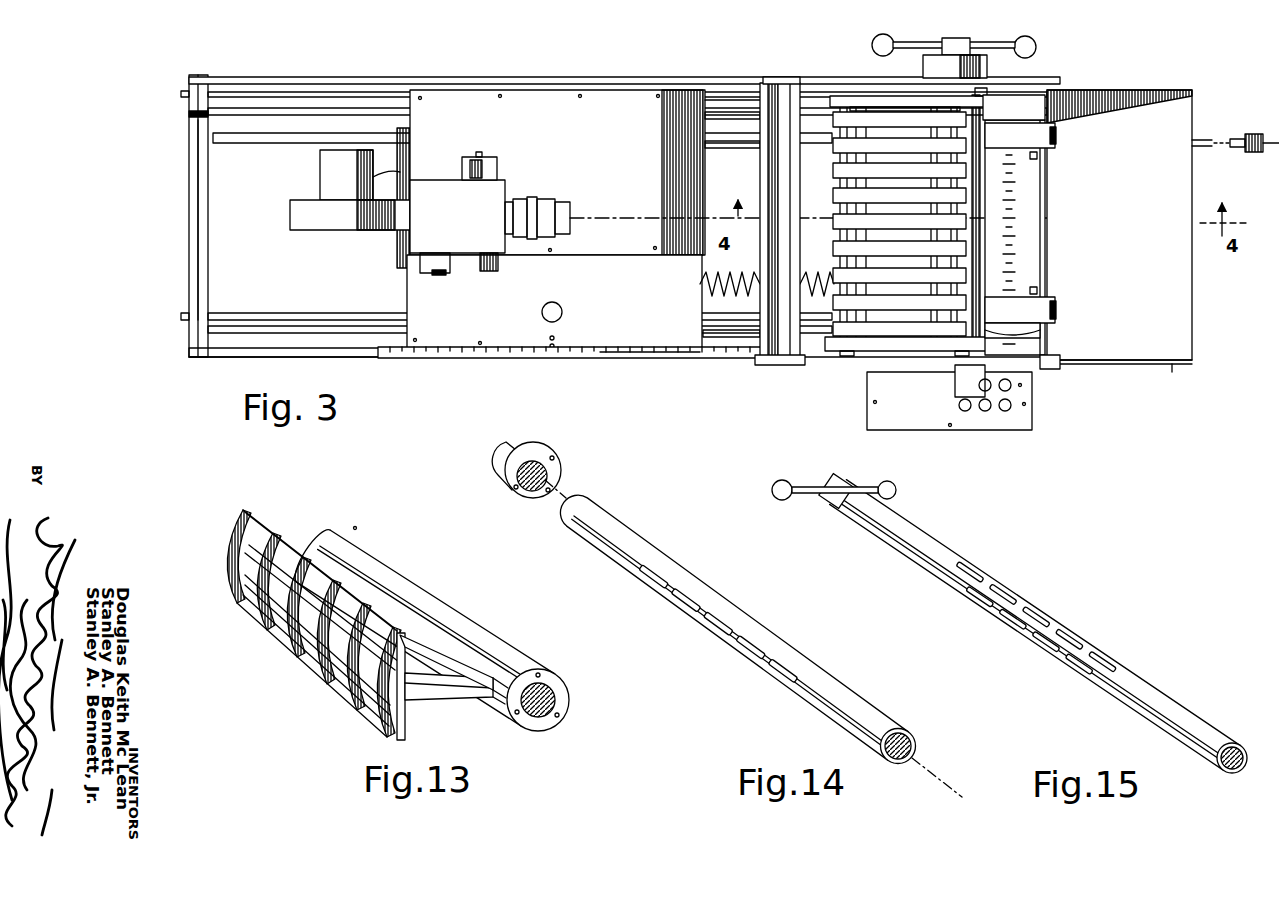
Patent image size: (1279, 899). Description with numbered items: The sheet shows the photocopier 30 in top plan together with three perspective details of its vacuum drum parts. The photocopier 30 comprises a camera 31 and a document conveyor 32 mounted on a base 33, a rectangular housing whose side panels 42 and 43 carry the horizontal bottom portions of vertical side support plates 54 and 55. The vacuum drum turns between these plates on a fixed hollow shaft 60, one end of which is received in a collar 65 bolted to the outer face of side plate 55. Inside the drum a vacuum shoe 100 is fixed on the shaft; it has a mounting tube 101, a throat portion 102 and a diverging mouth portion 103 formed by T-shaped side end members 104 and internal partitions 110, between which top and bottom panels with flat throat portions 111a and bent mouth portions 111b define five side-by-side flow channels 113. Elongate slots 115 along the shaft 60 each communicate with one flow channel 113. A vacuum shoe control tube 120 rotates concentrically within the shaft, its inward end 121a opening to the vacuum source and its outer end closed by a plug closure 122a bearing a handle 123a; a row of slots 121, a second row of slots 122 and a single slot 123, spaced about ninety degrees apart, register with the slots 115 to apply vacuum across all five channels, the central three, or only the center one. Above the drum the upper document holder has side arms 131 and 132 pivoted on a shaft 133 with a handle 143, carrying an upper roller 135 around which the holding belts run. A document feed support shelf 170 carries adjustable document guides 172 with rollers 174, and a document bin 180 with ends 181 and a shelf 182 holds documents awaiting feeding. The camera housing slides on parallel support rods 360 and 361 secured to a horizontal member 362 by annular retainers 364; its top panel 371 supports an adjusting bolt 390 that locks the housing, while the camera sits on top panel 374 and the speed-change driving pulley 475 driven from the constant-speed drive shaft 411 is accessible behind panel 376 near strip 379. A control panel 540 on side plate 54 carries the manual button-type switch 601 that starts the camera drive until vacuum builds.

In FIG. 3, the photocopier 30 is at (143, 78).
In FIG. 3, the camera 31 is at (507, 178).
In FIG. 3, the document conveyor 32 is at (1062, 372).
In FIG. 3, the base 33 is at (601, 209).
In FIG. 3, the side panel 42 is at (273, 350).
In FIG. 3, the side panel 43 is at (258, 75).
In FIG. 3, the side support plate 54 is at (805, 365).
In FIG. 3, the side support plate 55 is at (810, 62).
In FIG. 14, the hollow shaft 60 is at (737, 629).
In FIG. 14, the collar 65 is at (520, 440).
In FIG. 13, the vacuum shoe 100 is at (393, 606).
In FIG. 13, the mounting tube 101 is at (565, 710).
In FIG. 13, the throat portion 102 is at (462, 700).
In FIG. 13, the diverging mouth portion 103 is at (405, 703).
In FIG. 13, the T-shaped side end member 104 is at (243, 572).
In FIG. 13, the partition 110 is at (268, 592).
In FIG. 13, the flat throat portion 111a is at (556, 622).
In FIG. 13, the bent mouth portion 111b is at (250, 537).
In FIG. 13, the flow channel 113 is at (338, 641).
In FIG. 14, the elongate slot 115 is at (652, 570).
In FIG. 15, the vacuum shoe control tube 120 is at (1040, 643).
In FIG. 15, the row of slots 121 is at (975, 570).
In FIG. 15, the inward end 121a is at (1251, 799).
In FIG. 15, the second row of slots 122 is at (985, 605).
In FIG. 15, the plug closure 122a is at (858, 454).
In FIG. 15, the single slot 123 is at (1025, 644).
In FIG. 3, the handle 123a is at (920, 34).
In FIG. 15, the handle 123a is at (803, 496).
In FIG. 3, the side arm 131 is at (868, 95).
In FIG. 3, the side arm 132 is at (897, 247).
In FIG. 3, the shaft 133 is at (1035, 345).
In FIG. 3, the upper roller 135 is at (862, 180).
In FIG. 3, the handle 143 is at (850, 215).
In FIG. 3, the document feed support shelf 170 is at (1040, 102).
In FIG. 3, the document guide 172 is at (1038, 143).
In FIG. 3, the roller 174 is at (1038, 158).
In FIG. 3, the document bin 180 is at (1172, 364).
In FIG. 3, the end 181 is at (1170, 92).
In FIG. 3, the shelf 182 is at (1185, 306).
In FIG. 3, the support rod 360 is at (722, 335).
In FIG. 3, the support rod 361 is at (730, 100).
In FIG. 3, the horizontal member 362 is at (200, 212).
In FIG. 3, the annular retainer 364 is at (190, 96).
In FIG. 3, the top panel 371 is at (428, 345).
In FIG. 3, the top panel 374 is at (540, 70).
In FIG. 3, the panel 376 is at (548, 352).
In FIG. 3, the scale strip 379 is at (628, 352).
In FIG. 3, the adjusting bolt 390 is at (555, 313).
In FIG. 3, the drive shaft 411 is at (232, 142).
In FIG. 3, the driving pulley 475 is at (397, 130).
In FIG. 3, the control panel 540 is at (1012, 430).
In FIG. 3, the manual button-type switch 601 is at (968, 420).